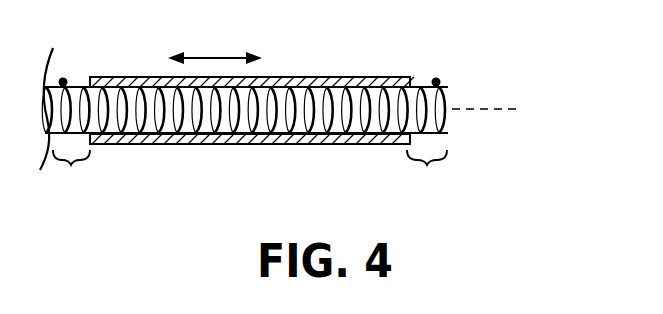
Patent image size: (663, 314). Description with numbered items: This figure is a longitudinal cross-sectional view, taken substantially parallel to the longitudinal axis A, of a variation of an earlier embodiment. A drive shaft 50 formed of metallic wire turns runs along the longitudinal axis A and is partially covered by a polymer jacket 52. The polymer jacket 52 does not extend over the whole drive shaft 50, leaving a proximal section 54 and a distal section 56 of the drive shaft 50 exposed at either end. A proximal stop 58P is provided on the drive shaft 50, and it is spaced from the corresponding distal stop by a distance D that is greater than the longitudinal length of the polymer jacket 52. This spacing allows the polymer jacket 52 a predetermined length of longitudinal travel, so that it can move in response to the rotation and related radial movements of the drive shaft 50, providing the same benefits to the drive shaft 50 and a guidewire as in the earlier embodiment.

The drive shaft 50 is at (450, 98).
The polymer jacket 52 is at (335, 77).
The proximal section 54 is at (71, 172).
The distal section 56 is at (427, 171).
The proximal stop 58P is at (63, 79).
The distance marker point D is at (436, 79).
The longitudinal axis A is at (496, 110).